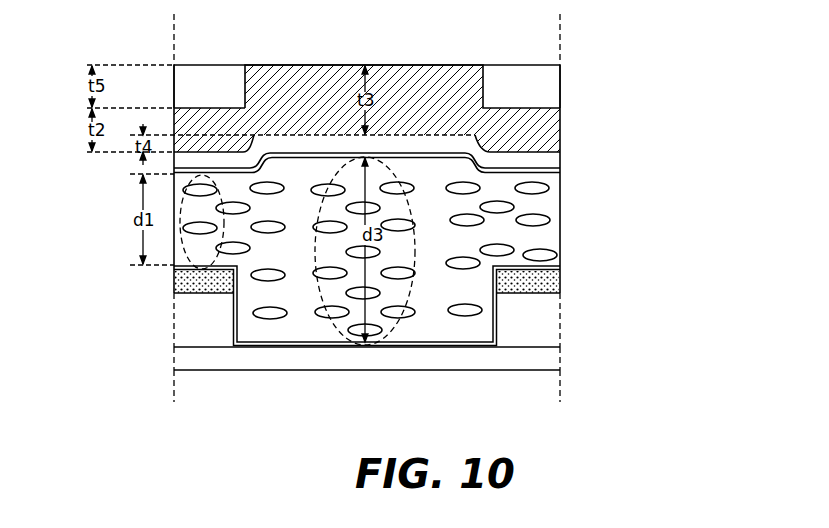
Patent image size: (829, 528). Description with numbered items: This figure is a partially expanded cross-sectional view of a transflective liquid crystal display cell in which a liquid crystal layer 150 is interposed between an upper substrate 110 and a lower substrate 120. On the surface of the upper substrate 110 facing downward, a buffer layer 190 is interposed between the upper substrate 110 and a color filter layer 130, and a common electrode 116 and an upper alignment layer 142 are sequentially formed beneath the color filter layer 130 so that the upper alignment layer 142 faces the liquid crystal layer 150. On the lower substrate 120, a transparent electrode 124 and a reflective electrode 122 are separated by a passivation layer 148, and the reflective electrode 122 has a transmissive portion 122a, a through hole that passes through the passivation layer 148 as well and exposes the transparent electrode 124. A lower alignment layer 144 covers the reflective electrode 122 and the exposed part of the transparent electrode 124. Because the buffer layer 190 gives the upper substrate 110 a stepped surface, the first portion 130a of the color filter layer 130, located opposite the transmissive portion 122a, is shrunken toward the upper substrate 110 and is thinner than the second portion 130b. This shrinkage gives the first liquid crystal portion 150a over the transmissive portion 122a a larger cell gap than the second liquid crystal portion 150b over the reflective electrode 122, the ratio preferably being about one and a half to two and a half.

The upper substrate 110 is at (547, 39).
The buffer layer 190 is at (553, 75).
The color filter layer 130 is at (702, 93).
The first portion of the color filter layer 130a is at (483, 85).
The second portion of the color filter layer 130b is at (533, 123).
The common electrode 116 is at (553, 158).
The upper alignment layer 142 is at (553, 172).
The liquid crystal layer 150 is at (552, 220).
The first liquid crystal portion 150a is at (333, 322).
The second liquid crystal portion 150b is at (174, 268).
The lower alignment layer 144 is at (560, 263).
The reflective electrode 122 is at (557, 281).
The transmissive portion 122a is at (290, 287).
The passivation layer 148 is at (550, 320).
The transparent electrode 124 is at (550, 358).
The lower substrate 120 is at (550, 392).